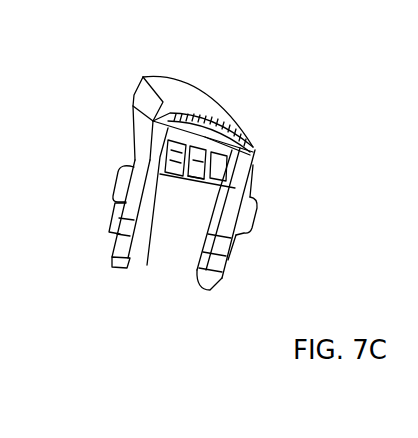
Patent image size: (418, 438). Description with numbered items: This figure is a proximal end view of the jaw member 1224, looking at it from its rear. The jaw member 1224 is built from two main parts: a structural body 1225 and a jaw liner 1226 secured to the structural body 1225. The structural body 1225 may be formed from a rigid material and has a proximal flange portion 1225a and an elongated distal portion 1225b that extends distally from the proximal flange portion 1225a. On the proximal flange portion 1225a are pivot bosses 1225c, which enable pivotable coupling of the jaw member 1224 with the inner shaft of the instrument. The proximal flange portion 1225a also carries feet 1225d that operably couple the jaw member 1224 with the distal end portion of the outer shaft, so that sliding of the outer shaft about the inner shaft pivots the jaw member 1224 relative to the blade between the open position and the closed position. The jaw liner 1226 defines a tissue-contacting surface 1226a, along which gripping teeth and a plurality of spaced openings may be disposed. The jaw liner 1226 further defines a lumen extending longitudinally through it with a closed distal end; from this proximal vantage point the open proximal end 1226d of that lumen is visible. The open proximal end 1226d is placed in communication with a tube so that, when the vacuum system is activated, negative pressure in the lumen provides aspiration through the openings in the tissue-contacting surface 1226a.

The jaw member 1224 is at (278, 72).
The structural body 1225 is at (183, 100).
The proximal flange portion 1225a is at (221, 251).
The elongated distal portion 1225b is at (217, 110).
The pivot bosses 1225c is at (256, 222).
The feet 1225d is at (207, 292).
The jaw liner 1226 is at (195, 180).
The tissue-contacting surface 1226a is at (197, 187).
The open proximal end 1226d is at (195, 176).